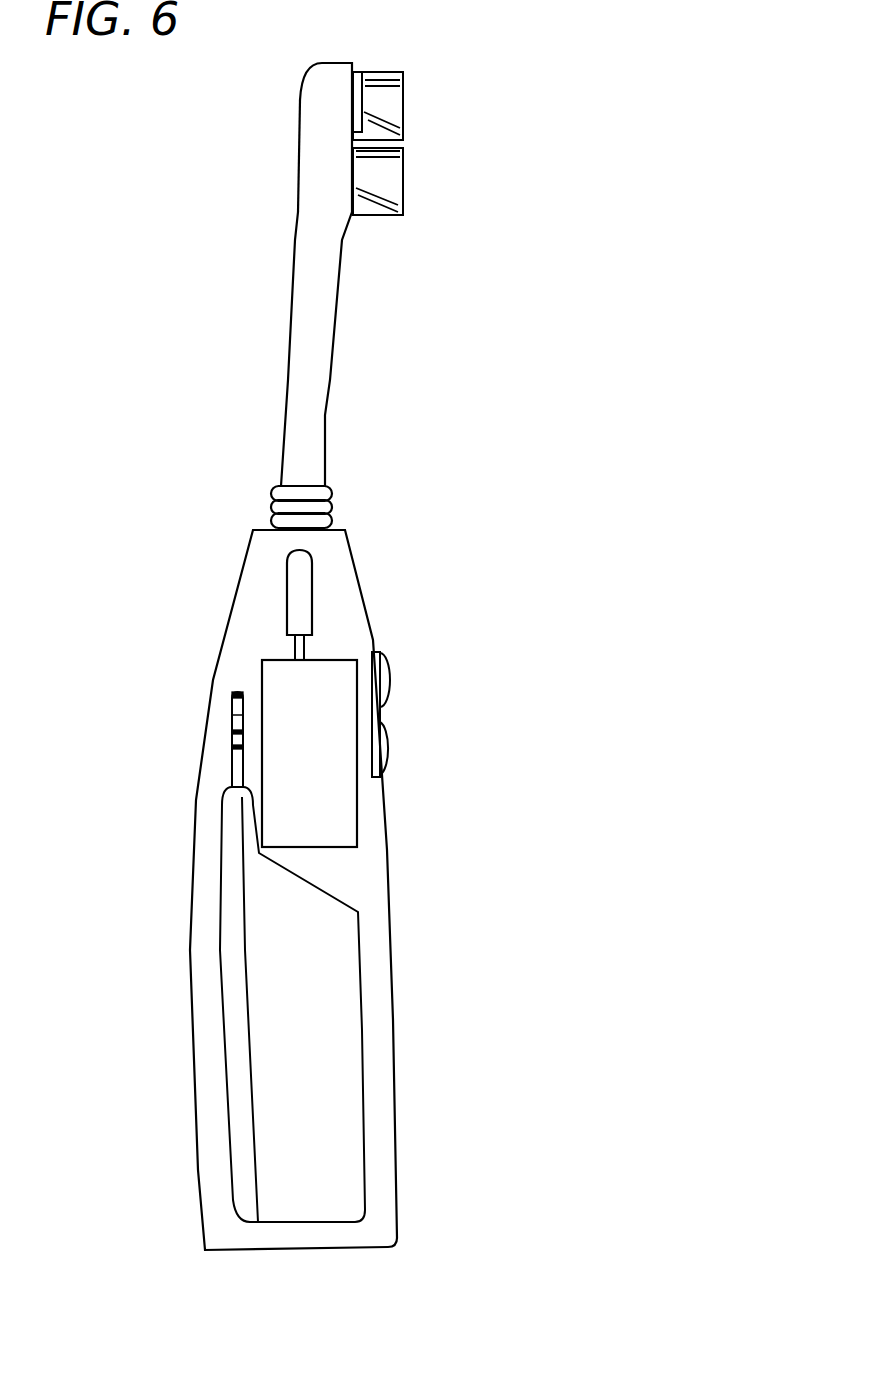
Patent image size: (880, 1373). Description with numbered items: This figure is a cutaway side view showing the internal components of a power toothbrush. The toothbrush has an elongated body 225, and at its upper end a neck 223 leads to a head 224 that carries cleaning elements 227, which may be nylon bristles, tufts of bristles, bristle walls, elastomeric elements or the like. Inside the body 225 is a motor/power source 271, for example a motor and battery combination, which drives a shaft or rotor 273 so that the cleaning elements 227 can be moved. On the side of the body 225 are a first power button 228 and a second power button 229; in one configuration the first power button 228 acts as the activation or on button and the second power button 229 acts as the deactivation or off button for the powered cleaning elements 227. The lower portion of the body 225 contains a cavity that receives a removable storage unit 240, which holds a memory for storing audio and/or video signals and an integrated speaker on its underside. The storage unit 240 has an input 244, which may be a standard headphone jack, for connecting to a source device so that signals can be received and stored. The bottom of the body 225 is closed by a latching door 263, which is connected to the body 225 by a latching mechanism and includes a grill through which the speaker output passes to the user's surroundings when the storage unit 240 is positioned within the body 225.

The neck 223 is at (330, 363).
The head 224 is at (300, 176).
The body 225 is at (225, 1128).
The cleaning elements 227 is at (403, 113).
The first power button 228 is at (390, 680).
The second power button 229 is at (390, 748).
The removable storage unit 240 is at (280, 972).
The input 244 is at (232, 733).
The latching door 263 is at (353, 1248).
The motor/power source 271 is at (333, 788).
The shaft or rotor 273 is at (305, 578).